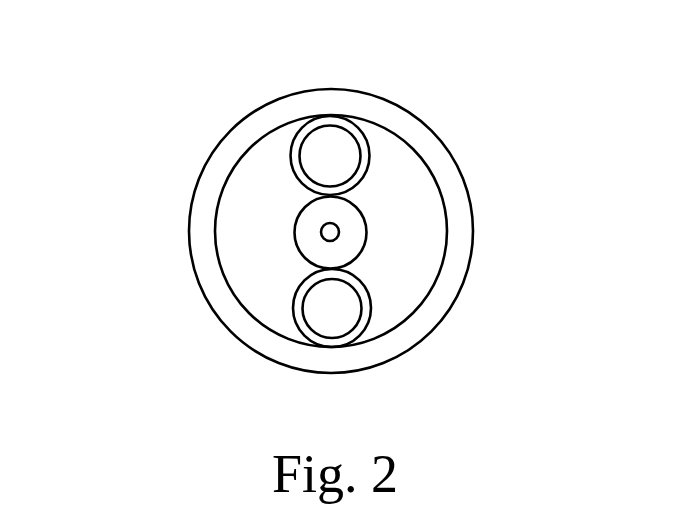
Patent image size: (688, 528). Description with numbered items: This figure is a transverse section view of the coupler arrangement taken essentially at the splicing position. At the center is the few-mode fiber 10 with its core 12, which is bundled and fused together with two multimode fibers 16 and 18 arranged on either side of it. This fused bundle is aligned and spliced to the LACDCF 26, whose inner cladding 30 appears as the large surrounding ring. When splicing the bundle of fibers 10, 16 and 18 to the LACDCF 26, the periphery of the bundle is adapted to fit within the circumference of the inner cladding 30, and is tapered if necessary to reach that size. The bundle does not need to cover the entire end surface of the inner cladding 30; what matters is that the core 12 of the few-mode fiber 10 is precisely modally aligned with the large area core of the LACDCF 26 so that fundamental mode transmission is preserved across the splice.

The few-mode fiber 10 is at (292, 230).
The core 12 is at (333, 232).
The multimode fiber 16 is at (368, 145).
The multimode fiber 18 is at (373, 317).
The LACDCF 26 is at (242, 117).
The inner cladding 30 is at (418, 268).